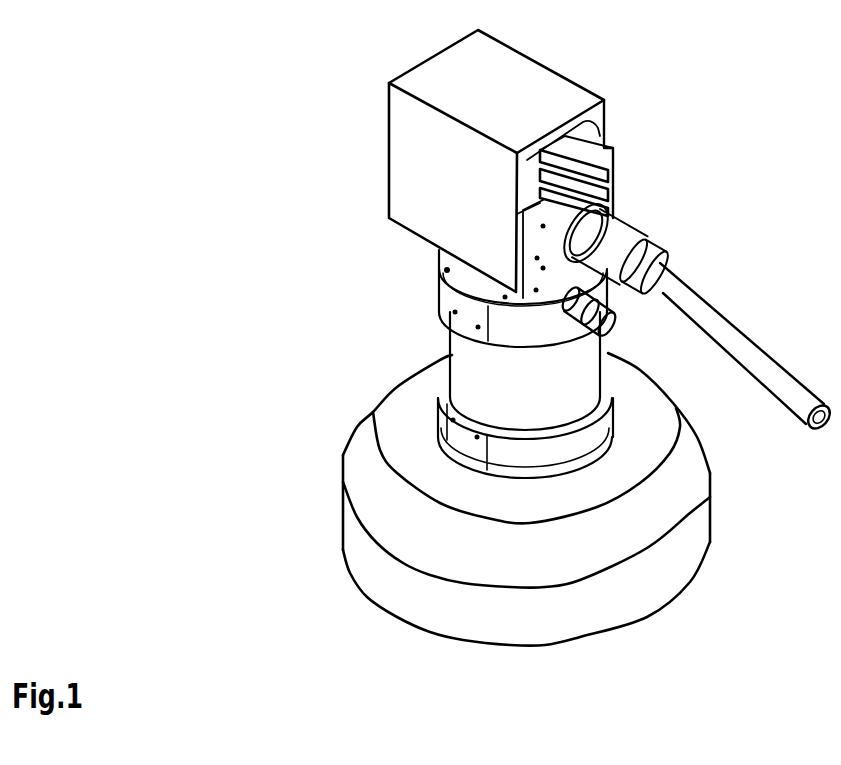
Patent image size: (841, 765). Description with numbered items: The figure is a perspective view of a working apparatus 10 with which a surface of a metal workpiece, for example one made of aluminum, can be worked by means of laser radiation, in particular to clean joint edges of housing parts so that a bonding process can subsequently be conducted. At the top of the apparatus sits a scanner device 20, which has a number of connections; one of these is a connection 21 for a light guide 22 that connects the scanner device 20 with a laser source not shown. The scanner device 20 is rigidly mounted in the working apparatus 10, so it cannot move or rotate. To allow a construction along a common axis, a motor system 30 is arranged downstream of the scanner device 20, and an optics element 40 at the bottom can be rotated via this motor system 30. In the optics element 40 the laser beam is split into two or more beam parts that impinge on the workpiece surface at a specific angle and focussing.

The working apparatus 10 is at (292, 172).
The scanner device 20 is at (448, 75).
The connection 21 is at (615, 208).
The light guide 22 is at (693, 300).
The motor system 30 is at (470, 358).
The optics element 40 is at (375, 487).